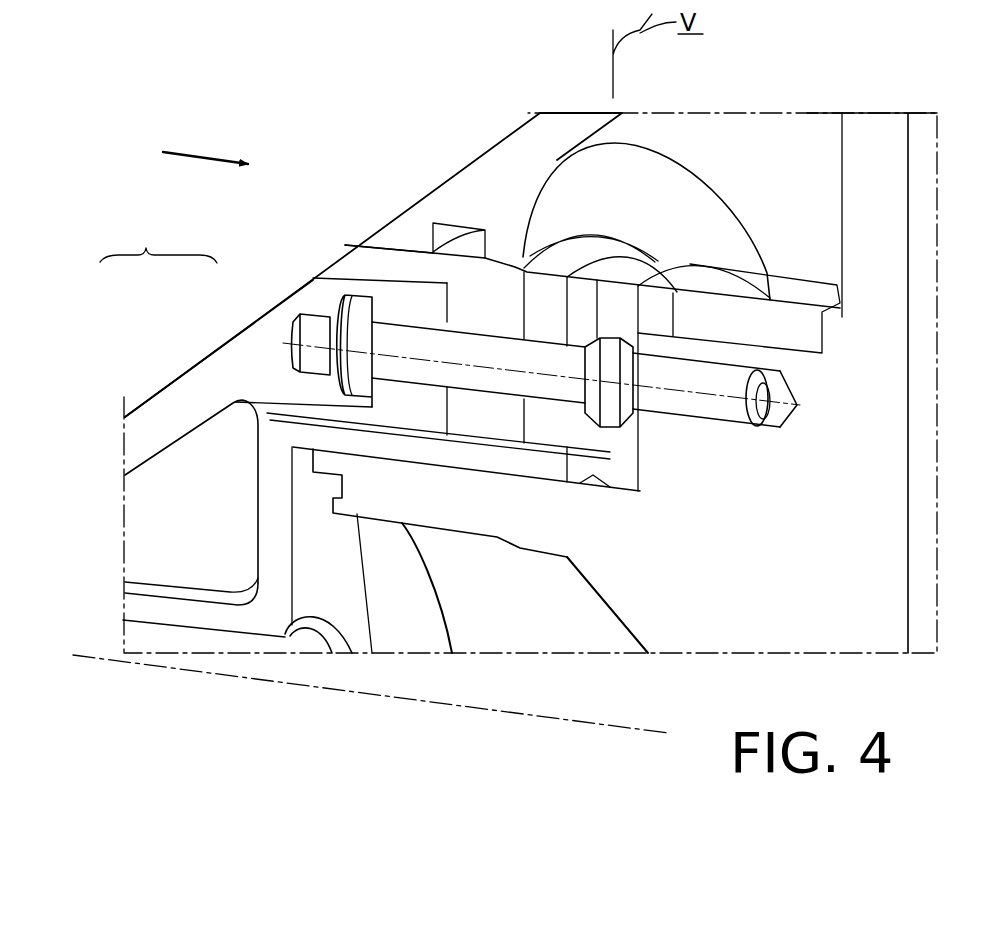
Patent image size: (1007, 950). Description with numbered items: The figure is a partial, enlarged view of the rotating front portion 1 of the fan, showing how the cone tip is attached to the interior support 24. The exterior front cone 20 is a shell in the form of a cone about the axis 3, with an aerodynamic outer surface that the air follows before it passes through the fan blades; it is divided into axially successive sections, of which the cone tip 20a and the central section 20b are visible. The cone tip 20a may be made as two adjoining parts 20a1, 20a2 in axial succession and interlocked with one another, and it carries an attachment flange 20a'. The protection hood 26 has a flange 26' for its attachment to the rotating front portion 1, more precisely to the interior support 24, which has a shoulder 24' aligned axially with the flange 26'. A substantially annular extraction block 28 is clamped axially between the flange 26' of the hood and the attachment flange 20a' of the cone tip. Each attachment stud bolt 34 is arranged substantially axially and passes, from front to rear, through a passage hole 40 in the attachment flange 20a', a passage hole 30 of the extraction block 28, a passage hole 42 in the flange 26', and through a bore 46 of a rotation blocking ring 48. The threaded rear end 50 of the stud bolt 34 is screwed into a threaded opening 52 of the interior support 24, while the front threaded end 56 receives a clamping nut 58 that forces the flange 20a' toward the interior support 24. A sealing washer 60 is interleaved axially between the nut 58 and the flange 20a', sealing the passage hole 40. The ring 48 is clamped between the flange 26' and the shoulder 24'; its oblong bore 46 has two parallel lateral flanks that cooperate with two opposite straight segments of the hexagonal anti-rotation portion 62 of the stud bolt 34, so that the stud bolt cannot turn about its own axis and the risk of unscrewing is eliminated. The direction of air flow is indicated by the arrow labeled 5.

The rotating front portion 1 is at (360, 81).
The axis 3 is at (185, 672).
The gas flow direction 5 is at (198, 155).
The exterior front cone 20 is at (410, 158).
The cone tip 20a is at (158, 241).
The adjoining part 20a1 is at (183, 370).
The adjoining part 20a2 is at (343, 248).
The attachment flange 20a' is at (328, 629).
The central section 20b is at (473, 158).
The interior support 24 is at (738, 335).
The shoulder 24' is at (646, 197).
The protection hood 26 is at (364, 610).
The flange 26' is at (628, 272).
The extraction block 28 is at (547, 290).
The passage hole 30 is at (462, 335).
The attachment stud bolt 34 is at (468, 405).
The passage hole 40 is at (458, 382).
The passage hole 42 is at (585, 412).
The bore 46 is at (640, 427).
The rotation blocking ring 48 is at (610, 432).
The threaded rear end 50 is at (723, 410).
The threaded opening 52 is at (793, 388).
The front threaded end 56 is at (292, 352).
The clamping nut 58 is at (290, 343).
The sealing washer 60 is at (340, 296).
The anti-rotation portion 62 is at (608, 428).